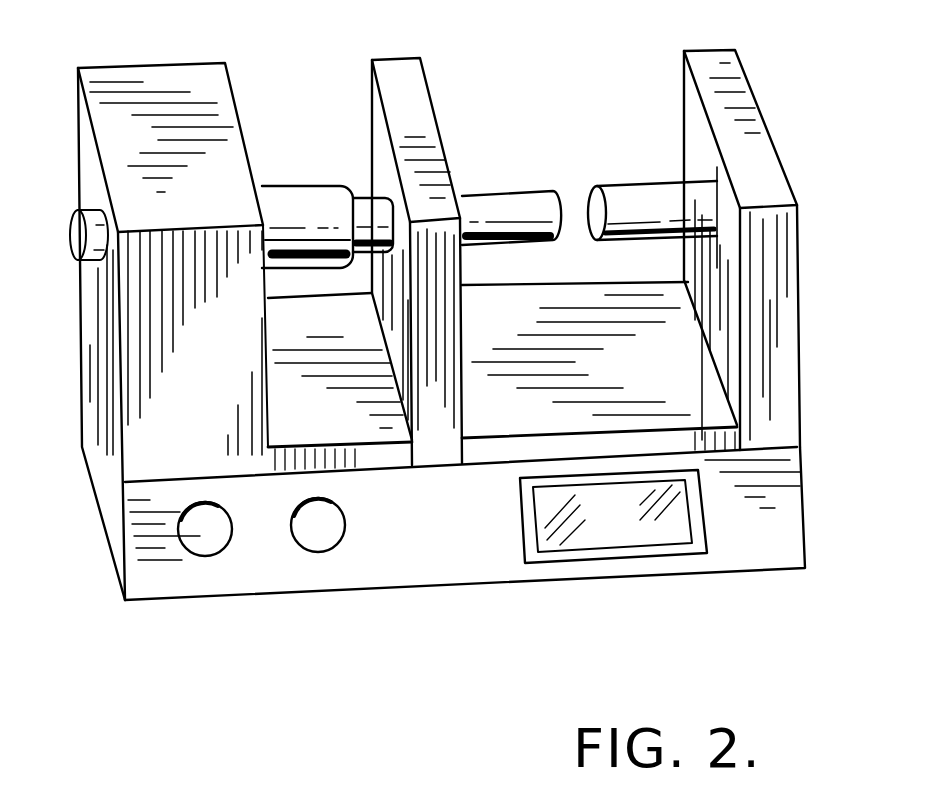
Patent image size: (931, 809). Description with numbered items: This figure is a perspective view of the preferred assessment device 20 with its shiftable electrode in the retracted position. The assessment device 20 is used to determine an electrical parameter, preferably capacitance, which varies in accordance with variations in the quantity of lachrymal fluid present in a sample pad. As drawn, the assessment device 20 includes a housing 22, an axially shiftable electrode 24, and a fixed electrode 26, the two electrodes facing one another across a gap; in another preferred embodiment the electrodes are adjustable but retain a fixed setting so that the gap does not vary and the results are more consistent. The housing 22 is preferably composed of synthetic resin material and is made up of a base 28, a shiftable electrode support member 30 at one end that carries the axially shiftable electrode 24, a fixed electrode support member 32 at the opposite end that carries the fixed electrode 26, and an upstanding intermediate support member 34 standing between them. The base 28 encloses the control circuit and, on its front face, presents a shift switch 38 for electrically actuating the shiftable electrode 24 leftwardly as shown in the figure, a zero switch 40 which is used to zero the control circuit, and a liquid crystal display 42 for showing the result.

The assessment device 20 is at (430, 329).
The housing 22 is at (797, 436).
The axially shiftable electrode 24 is at (296, 180).
The fixed electrode 26 is at (628, 182).
The base 28 is at (492, 585).
The shiftable electrode support member 30 is at (97, 307).
The fixed electrode support member 32 is at (787, 322).
The upstanding intermediate support member 34 is at (457, 352).
The shift switch 38 is at (200, 511).
The zero switch 40 is at (333, 503).
The liquid crystal display 42 is at (700, 507).